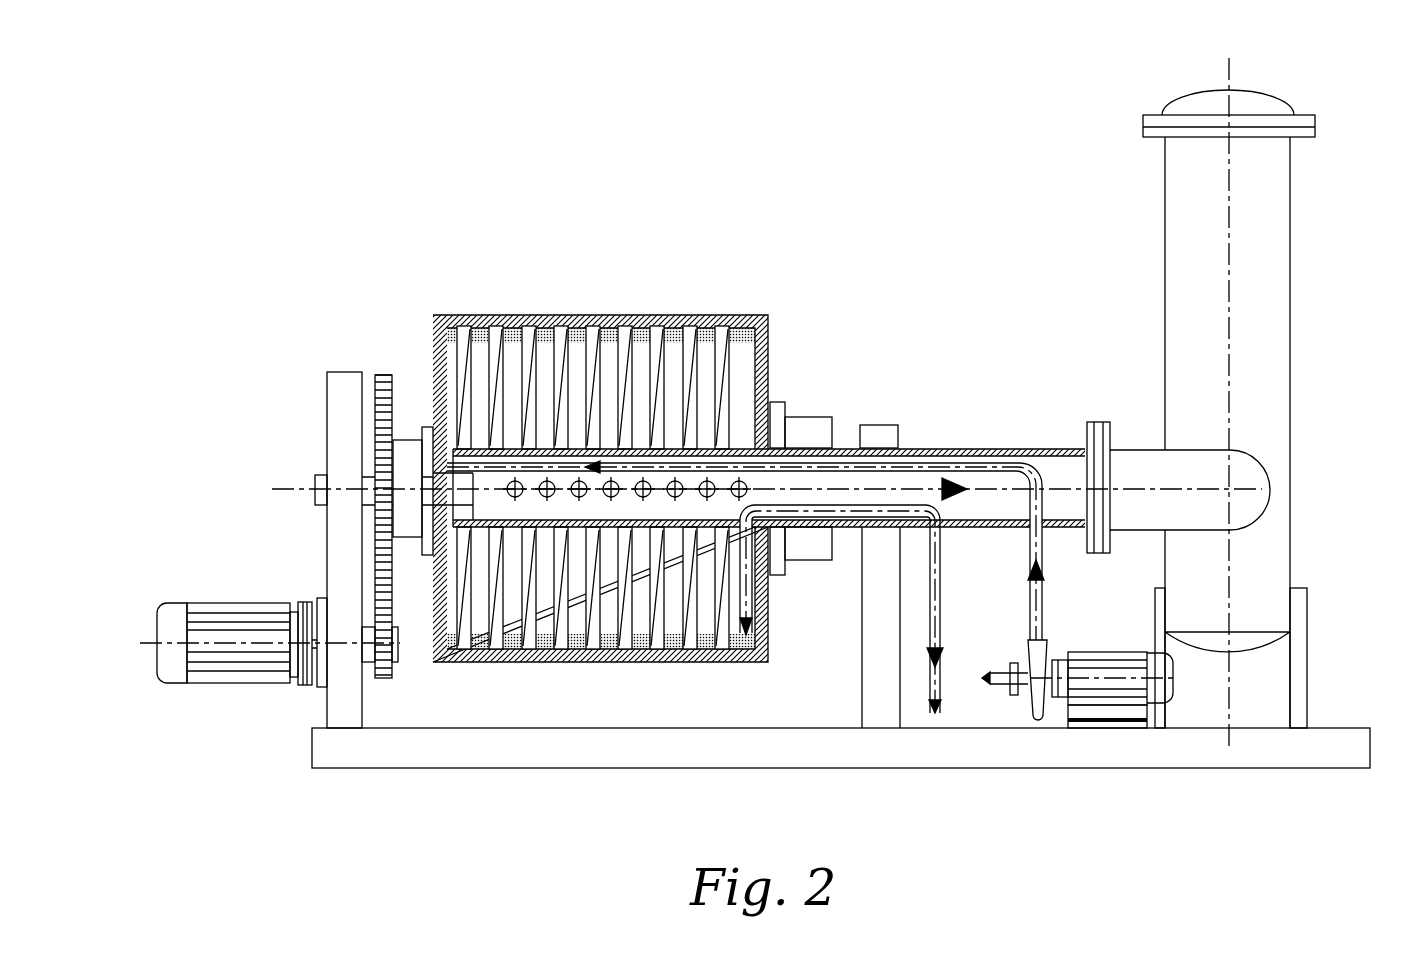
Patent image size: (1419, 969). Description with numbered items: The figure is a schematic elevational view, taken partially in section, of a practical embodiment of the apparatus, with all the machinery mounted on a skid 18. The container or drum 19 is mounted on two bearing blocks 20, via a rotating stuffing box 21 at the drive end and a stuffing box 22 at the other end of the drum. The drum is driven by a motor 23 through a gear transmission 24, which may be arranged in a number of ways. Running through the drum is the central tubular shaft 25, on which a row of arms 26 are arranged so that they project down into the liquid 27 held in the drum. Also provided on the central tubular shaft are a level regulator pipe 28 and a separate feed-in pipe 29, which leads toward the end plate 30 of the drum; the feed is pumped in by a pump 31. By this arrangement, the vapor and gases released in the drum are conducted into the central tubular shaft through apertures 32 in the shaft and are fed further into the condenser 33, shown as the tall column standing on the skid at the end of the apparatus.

The skid 18 is at (420, 762).
The container (drum) 19 is at (577, 318).
The bearing blocks 20 is at (343, 378).
The rotating stuffing box 21 is at (408, 455).
The stuffing box 22 is at (806, 417).
The motor 23 is at (175, 675).
The gear transmission 24 is at (385, 373).
The central tubular shaft 25 is at (993, 448).
The arms 26 is at (604, 662).
The liquid 27 is at (705, 665).
The level regulator pipe 28 is at (757, 588).
The feed-in pipe 29 is at (1045, 598).
The end plate 30 is at (432, 632).
The pump 31 is at (1108, 698).
The apertures 32 is at (703, 473).
The condenser 33 is at (1275, 340).